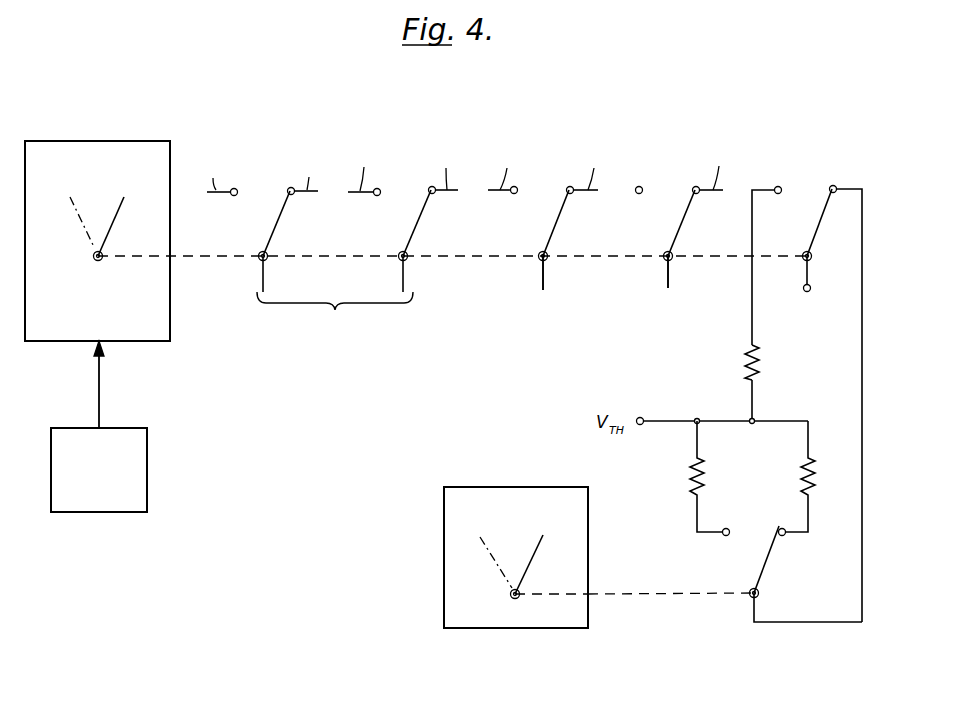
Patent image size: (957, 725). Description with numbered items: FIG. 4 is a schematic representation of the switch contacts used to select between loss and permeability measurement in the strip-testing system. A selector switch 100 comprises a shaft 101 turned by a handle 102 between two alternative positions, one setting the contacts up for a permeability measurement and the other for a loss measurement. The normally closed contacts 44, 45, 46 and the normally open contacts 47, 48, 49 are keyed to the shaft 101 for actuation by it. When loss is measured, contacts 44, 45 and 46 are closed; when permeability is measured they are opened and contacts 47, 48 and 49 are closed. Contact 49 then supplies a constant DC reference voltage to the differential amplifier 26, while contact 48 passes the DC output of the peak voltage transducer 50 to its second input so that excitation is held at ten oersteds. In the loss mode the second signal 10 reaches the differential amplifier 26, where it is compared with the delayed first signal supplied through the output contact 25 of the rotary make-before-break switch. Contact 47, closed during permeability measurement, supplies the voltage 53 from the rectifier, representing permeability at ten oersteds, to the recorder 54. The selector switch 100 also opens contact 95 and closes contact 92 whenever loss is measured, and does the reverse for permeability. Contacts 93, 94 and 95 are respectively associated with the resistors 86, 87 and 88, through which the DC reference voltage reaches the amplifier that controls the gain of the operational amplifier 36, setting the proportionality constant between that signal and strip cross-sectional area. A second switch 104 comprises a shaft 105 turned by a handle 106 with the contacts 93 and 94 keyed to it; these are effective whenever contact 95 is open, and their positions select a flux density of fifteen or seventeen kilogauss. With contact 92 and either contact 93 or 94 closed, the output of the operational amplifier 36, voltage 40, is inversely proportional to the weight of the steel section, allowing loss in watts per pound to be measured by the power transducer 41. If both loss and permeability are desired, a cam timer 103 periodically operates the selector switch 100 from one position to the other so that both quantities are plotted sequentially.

The selector switch 100 is at (95, 140).
The shaft 101 is at (212, 262).
The handle 102 is at (114, 218).
The cam timer 103 is at (106, 512).
The normally open contact 49 is at (219, 193).
The normally closed switch contact 46 is at (289, 222).
The normally open contact 48 is at (367, 211).
The peak voltage transducer 50 is at (366, 169).
The normally closed switch contact 45 is at (429, 240).
The second signal 10 is at (449, 168).
The normally open contact 47 is at (508, 210).
The voltage 53 is at (509, 168).
The normally closed switch contact 44 is at (569, 239).
The power transducer 41 is at (596, 168).
The recorder 54 is at (543, 285).
The contact 92 is at (694, 238).
The voltage 40 is at (720, 168).
The operational amplifier 36 is at (668, 285).
The contact 95 is at (807, 404).
The output contact 25 is at (807, 285).
The differential amplifier 26 is at (335, 312).
The 40.2K ohm resistor 88 is at (745, 362).
The 89.2K ohm resistor 87 is at (690, 476).
The 67K ohm resistor 86 is at (818, 468).
The contact 94 is at (727, 550).
The contact 93 is at (806, 574).
The switch 104 is at (444, 569).
The shaft 105 is at (660, 597).
The handle 106 is at (530, 564).